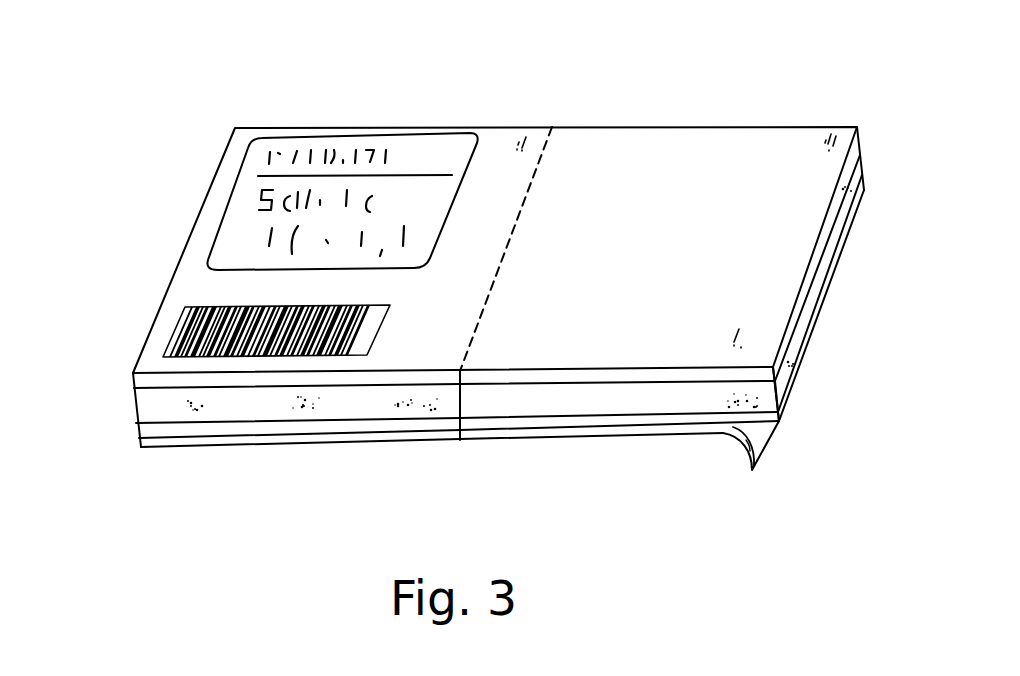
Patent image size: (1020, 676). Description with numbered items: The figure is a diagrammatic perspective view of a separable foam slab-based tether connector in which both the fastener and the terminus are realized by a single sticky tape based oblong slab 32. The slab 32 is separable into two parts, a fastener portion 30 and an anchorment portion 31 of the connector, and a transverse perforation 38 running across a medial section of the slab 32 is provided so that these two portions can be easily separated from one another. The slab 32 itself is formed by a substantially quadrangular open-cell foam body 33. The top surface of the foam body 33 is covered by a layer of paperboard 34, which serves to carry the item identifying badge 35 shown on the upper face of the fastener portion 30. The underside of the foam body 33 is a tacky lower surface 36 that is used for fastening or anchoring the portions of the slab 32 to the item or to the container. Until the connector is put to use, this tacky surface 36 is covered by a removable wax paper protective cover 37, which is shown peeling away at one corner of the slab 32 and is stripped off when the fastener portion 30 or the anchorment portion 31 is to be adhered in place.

The fastener portion 30 is at (770, 140).
The anchorment portion 31 is at (316, 128).
The sticky tape based oblong slab 32 is at (135, 413).
The open-cell foam body 33 is at (617, 407).
The layer of paperboard 34 is at (815, 250).
The item identifying badge 35 is at (235, 235).
The tacky lower surface 36 is at (780, 420).
The removable wax paper protective cover 37 is at (763, 452).
The transverse perforation 38 is at (547, 147).